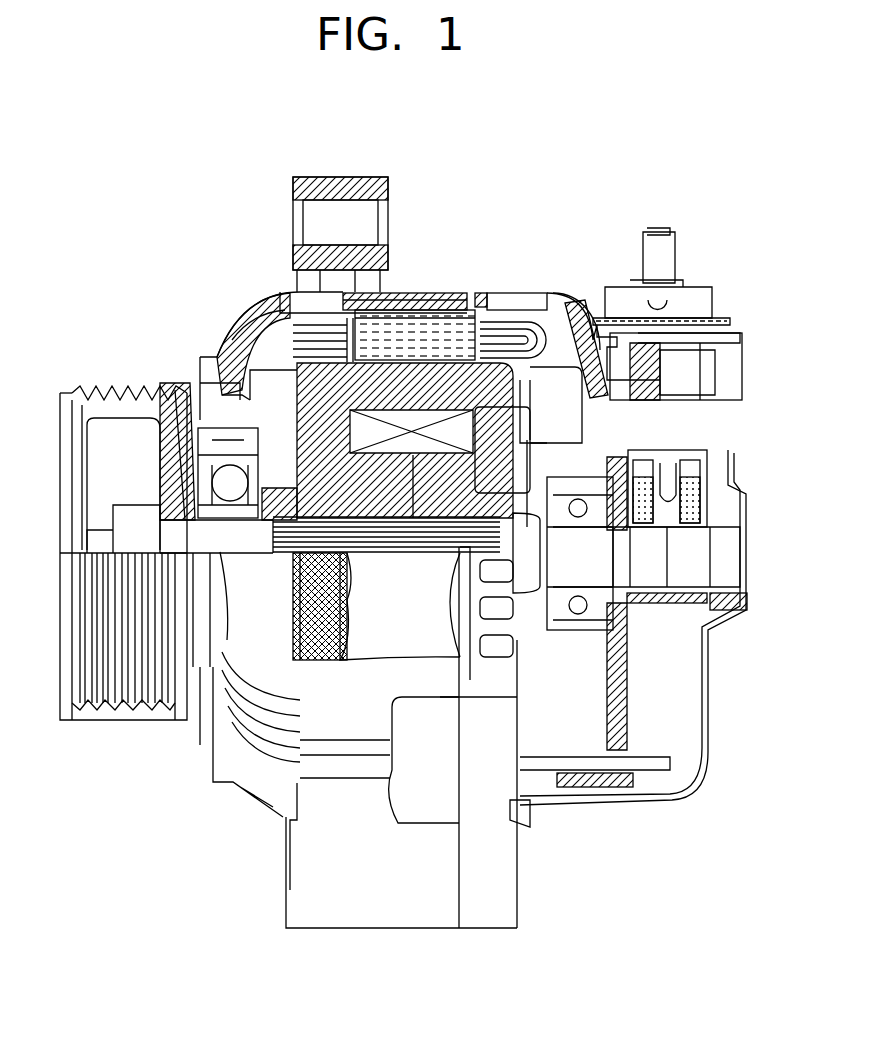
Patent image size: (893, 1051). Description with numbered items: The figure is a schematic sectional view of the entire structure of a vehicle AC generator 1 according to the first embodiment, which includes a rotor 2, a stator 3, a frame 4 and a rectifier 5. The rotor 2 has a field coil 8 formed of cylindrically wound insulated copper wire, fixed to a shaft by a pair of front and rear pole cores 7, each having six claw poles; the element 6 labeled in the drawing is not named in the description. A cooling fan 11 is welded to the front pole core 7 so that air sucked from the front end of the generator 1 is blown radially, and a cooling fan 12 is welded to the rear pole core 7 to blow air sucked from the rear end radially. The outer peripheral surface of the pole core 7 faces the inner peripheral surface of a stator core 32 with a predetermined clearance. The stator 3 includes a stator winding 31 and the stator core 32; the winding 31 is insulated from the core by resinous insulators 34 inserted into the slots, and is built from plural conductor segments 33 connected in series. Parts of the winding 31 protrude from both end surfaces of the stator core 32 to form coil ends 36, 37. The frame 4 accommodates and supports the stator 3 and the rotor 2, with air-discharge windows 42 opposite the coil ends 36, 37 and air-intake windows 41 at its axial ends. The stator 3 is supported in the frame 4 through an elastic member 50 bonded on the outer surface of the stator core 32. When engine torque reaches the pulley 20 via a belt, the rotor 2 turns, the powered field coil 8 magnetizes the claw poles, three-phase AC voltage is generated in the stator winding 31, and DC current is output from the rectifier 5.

The AC generator 1 is at (560, 176).
The rotor 2 is at (253, 362).
The stator 3 is at (541, 308).
The frame 4 is at (408, 305).
The rectifier 5 is at (675, 678).
The rotor shaft 6 is at (160, 490).
The pole core 7 is at (573, 290).
The field coil 8 is at (418, 425).
The cooling fan 11 is at (240, 395).
The cooling fan 12 is at (572, 417).
The pulley 20 is at (100, 398).
The stator winding 31 is at (288, 305).
The stator core 32 is at (386, 335).
The conductor segment 33 is at (508, 318).
The resinous insulator 34 is at (462, 312).
The coil end 36 is at (560, 300).
The coil end 37 is at (238, 320).
The air-intake window 41 is at (187, 420).
The air-discharge window 42 is at (258, 312).
The elastic member 50 is at (390, 312).